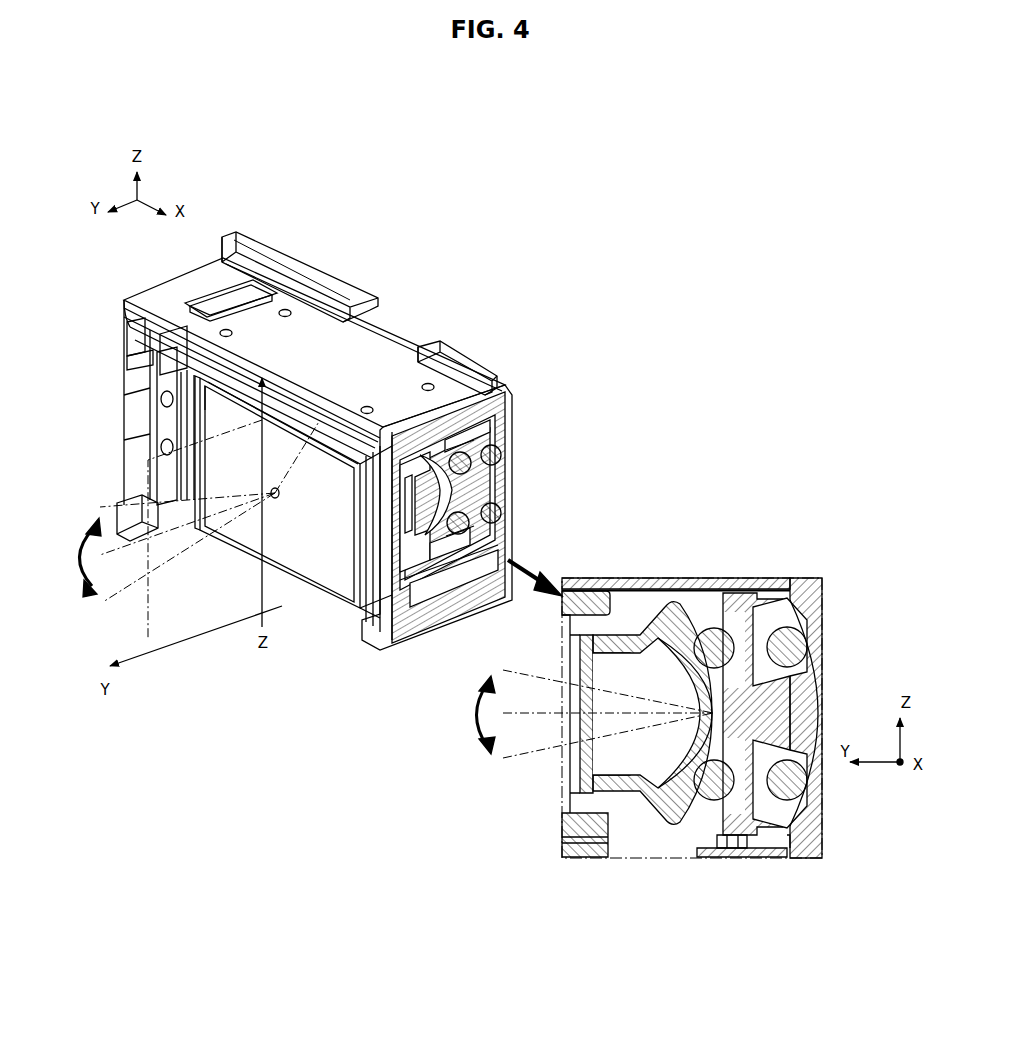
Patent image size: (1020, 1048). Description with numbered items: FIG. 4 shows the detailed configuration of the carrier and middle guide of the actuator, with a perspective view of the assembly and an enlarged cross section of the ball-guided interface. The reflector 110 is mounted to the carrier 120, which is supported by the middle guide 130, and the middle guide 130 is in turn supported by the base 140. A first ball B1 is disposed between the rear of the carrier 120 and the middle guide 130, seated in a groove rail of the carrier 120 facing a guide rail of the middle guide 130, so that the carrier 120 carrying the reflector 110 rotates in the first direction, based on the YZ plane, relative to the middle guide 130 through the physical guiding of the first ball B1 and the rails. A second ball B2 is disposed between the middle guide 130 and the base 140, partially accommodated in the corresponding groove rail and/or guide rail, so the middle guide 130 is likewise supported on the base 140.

The reflector 110 is at (326, 565).
The carrier 120 is at (668, 598).
The middle guide 130 is at (755, 596).
The base 140 is at (340, 308).
The first ball B1 is at (714, 625).
The second ball B2 is at (800, 655).